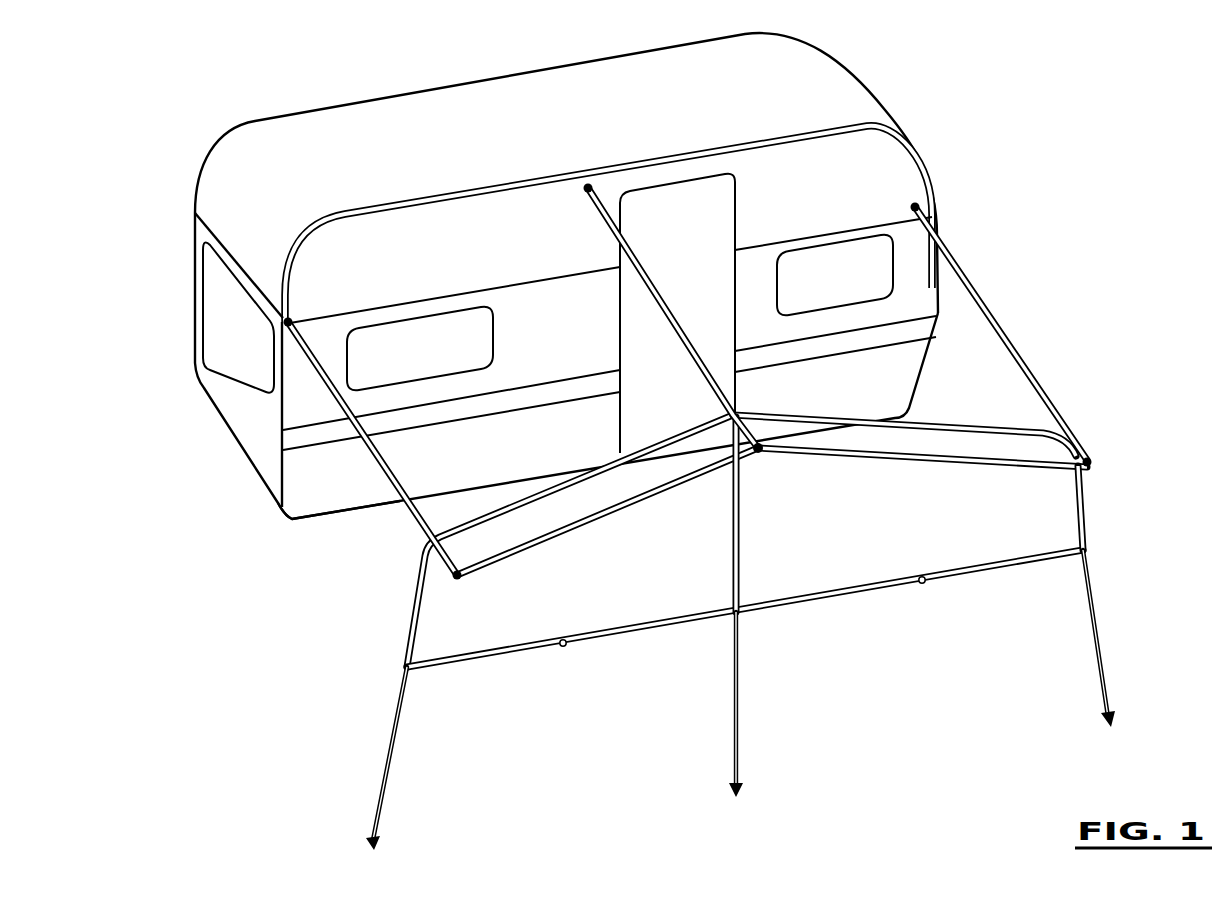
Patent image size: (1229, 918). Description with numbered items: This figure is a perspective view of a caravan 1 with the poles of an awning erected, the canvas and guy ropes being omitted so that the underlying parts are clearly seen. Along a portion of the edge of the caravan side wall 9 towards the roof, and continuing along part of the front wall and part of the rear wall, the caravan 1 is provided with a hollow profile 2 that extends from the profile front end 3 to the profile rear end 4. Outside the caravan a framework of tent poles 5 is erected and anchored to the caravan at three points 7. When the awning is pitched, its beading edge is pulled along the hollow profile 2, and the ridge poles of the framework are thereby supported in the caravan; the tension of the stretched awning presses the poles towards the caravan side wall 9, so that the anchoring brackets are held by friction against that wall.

The caravan 1 is at (589, 289).
The hollow profile 2 is at (742, 147).
The profile front end 3 is at (941, 304).
The profile rear end 4 is at (280, 408).
The tent poles 5 is at (657, 287).
The anchoring points 7 is at (293, 313).
The caravan side wall 9 is at (299, 494).